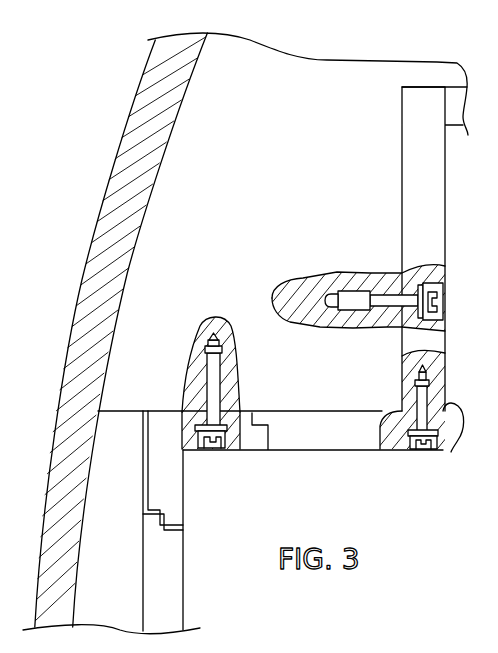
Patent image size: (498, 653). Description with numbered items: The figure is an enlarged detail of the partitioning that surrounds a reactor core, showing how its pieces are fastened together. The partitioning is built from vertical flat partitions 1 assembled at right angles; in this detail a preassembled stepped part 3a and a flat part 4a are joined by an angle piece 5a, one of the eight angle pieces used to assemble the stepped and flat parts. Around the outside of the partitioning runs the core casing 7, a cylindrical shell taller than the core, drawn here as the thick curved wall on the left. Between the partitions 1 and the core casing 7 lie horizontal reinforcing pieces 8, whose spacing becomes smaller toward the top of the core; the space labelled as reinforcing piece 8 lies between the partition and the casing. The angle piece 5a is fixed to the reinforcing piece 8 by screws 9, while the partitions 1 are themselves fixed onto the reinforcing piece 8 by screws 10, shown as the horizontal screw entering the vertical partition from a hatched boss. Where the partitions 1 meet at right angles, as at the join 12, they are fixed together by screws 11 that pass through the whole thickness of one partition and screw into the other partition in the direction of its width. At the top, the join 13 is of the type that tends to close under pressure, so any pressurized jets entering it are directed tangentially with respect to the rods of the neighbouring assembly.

The vertical flat partition 1 is at (414, 180).
The preassembled stepped part 3a is at (417, 123).
The flat part 4a is at (168, 580).
The angle piece 5a is at (170, 468).
The core casing 7 is at (168, 113).
The horizontal reinforcing piece 8 is at (175, 289).
The screw 9 is at (232, 450).
The screw 10 is at (413, 290).
The screw 11 is at (418, 457).
The right-angle join of partitions 12 is at (451, 452).
The join 13 is at (445, 107).